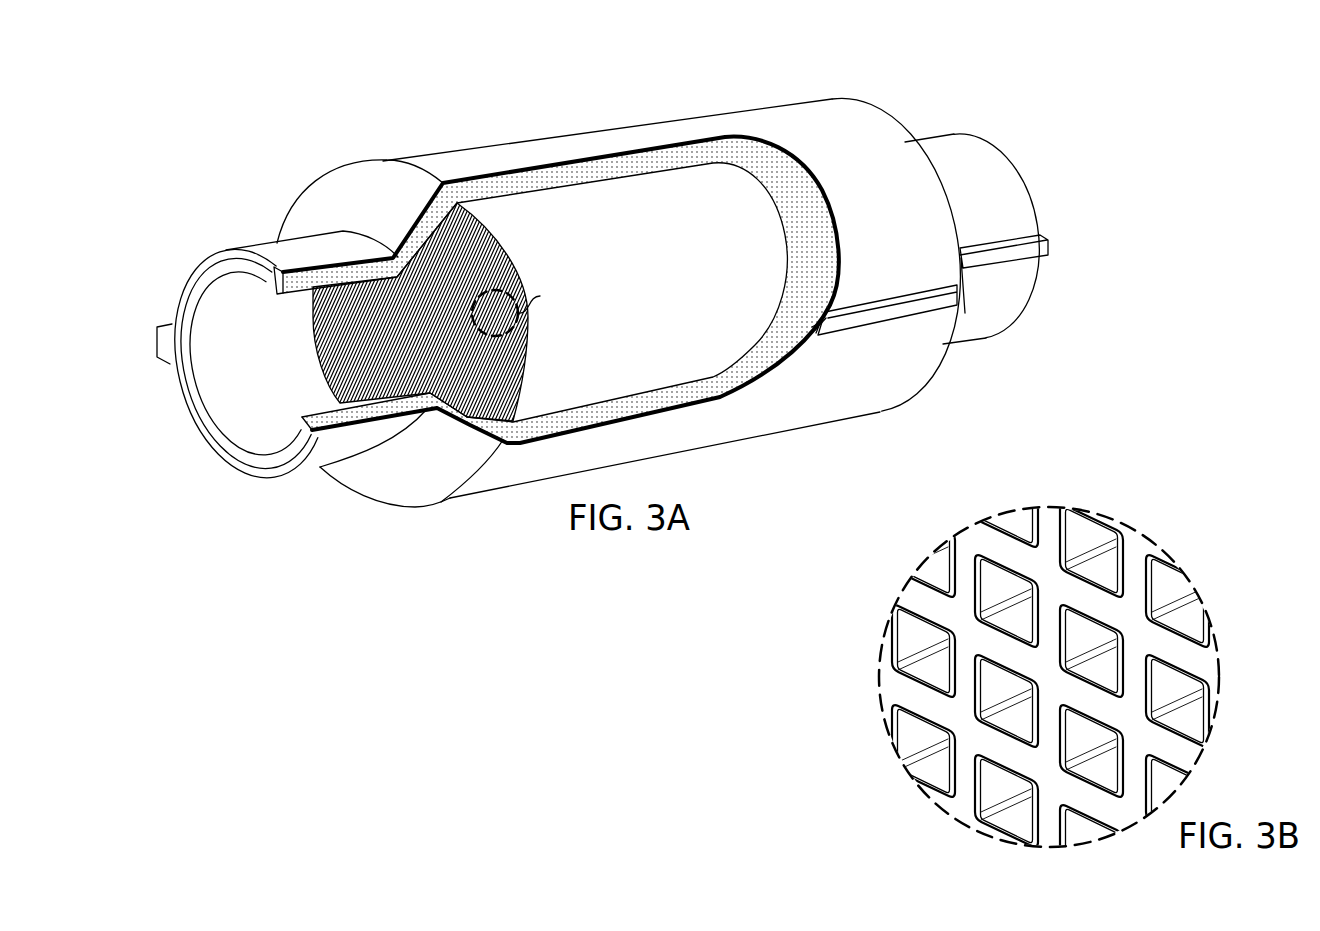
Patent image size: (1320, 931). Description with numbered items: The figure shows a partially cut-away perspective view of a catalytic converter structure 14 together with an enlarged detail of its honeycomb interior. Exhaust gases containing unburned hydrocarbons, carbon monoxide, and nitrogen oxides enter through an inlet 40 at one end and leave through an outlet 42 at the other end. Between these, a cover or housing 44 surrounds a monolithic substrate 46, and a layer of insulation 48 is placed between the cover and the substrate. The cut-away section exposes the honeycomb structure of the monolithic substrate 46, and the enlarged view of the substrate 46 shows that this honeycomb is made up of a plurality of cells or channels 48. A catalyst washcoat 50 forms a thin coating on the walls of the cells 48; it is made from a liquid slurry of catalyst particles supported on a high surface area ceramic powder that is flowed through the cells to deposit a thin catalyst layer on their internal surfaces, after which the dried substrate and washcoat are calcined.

In FIG. 3A, the catalytic converter structure 14 is at (252, 153).
In FIG. 3A, the inlet 40 is at (222, 407).
In FIG. 3A, the outlet 42 is at (1017, 184).
In FIG. 3A, the housing 44 is at (878, 131).
In FIG. 3A, the monolithic substrate 46 is at (345, 322).
In FIG. 3B, the monolithic substrate 46 is at (1133, 563).
In FIG. 3A, the layer of insulation / cells or channels 48 is at (775, 186).
In FIG. 3B, the layer of insulation / cells or channels 48 is at (1073, 533).
In FIG. 3B, the catalyst washcoat 50 is at (910, 605).